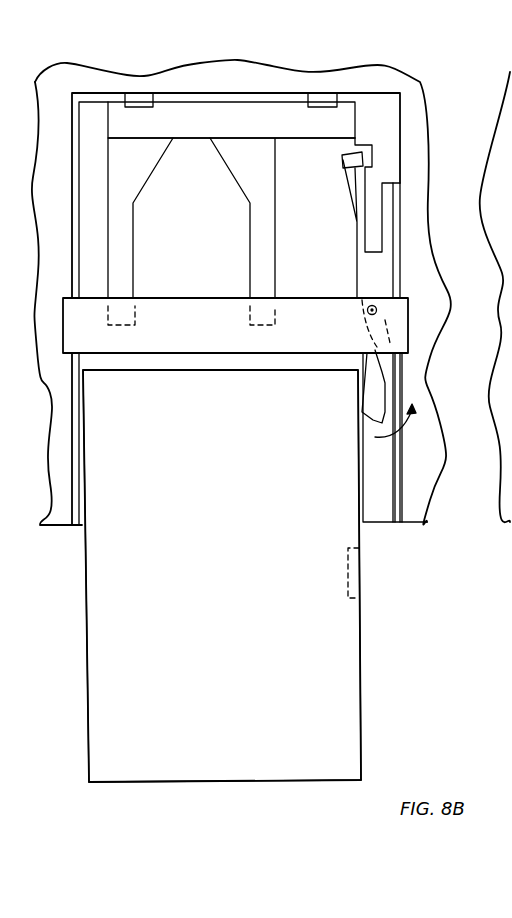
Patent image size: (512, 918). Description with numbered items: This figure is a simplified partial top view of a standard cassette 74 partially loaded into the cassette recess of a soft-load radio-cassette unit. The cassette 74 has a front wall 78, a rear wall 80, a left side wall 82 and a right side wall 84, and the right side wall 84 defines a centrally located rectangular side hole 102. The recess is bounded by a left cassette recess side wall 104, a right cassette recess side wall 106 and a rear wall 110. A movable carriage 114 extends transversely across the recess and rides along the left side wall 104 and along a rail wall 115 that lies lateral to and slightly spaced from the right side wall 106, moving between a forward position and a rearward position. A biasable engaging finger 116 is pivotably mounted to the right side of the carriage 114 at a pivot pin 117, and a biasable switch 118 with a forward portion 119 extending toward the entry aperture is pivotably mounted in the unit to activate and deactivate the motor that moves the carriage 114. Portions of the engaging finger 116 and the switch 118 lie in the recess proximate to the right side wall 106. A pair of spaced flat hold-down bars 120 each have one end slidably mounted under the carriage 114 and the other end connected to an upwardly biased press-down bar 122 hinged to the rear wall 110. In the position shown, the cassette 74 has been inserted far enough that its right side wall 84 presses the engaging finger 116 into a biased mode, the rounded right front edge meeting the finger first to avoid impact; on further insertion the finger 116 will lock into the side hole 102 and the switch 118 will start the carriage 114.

The standard cassette 74 is at (275, 567).
The front wall 78 is at (221, 370).
The rear wall 80 is at (238, 782).
The left side wall 82 is at (86, 596).
The right side wall 84 is at (360, 665).
The side hole 102 is at (360, 575).
The left cassette recess side wall 104 is at (77, 390).
The right cassette recess side wall 106 is at (362, 473).
The rear wall 110 is at (297, 92).
The movable carriage 114 is at (308, 312).
The rail wall 115 is at (398, 493).
The engaging finger 116 is at (383, 370).
The pivot pin 117 is at (376, 308).
The biasable switch 118 is at (346, 159).
The forward portion 119 is at (355, 182).
The hold-down bars 120 is at (267, 248).
The press-down bar 122 is at (253, 115).